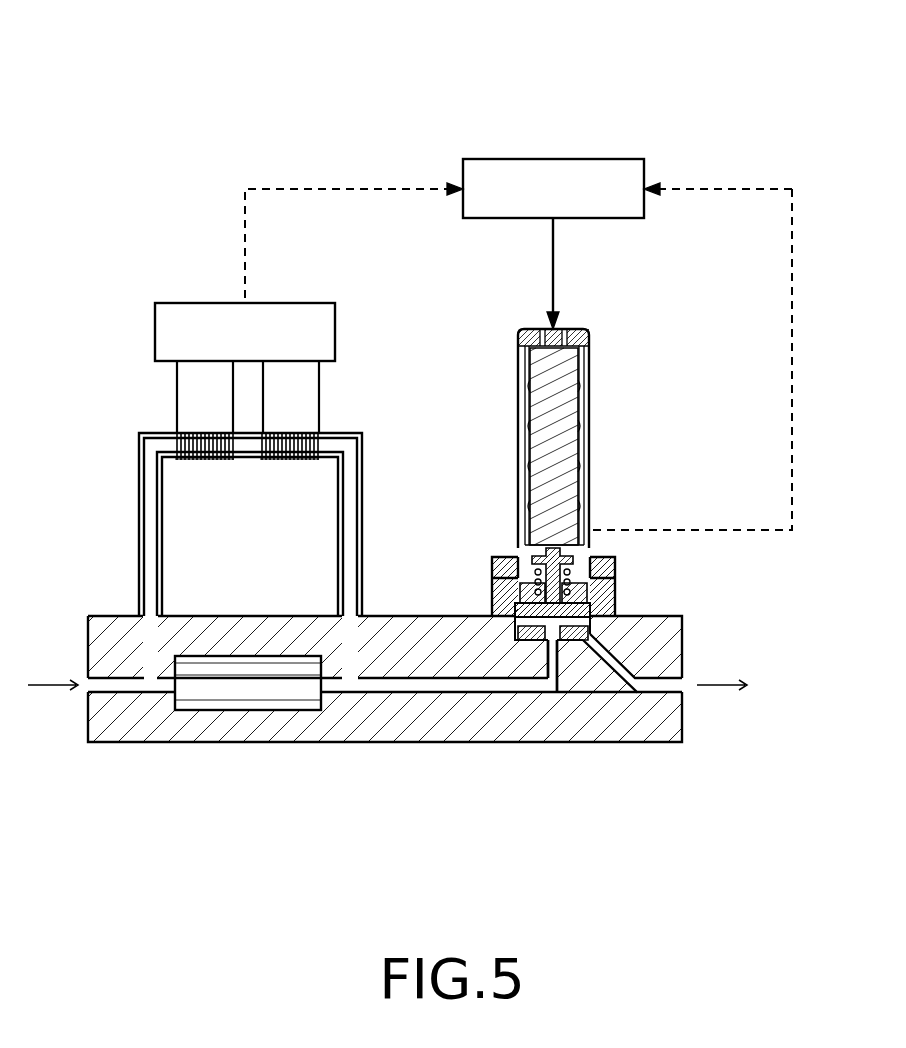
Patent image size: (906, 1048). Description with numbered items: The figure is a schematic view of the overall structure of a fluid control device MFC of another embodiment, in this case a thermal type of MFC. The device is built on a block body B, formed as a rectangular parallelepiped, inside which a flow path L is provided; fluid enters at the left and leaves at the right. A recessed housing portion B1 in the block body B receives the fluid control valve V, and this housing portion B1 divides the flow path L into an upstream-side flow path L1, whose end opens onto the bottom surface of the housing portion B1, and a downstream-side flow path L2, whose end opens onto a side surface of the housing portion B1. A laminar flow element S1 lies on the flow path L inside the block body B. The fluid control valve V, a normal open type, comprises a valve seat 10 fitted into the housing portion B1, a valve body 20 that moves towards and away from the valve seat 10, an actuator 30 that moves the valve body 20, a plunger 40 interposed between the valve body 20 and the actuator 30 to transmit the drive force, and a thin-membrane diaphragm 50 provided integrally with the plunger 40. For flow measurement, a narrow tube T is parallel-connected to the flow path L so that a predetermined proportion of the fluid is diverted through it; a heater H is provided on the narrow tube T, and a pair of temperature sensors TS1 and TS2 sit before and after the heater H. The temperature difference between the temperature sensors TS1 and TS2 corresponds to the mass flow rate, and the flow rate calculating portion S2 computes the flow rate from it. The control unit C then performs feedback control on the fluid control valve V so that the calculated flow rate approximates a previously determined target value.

The fluid control device MFC is at (137, 139).
The control unit C is at (553, 158).
The fluid control valve V is at (603, 331).
The flow rate calculating portion S2 is at (336, 331).
The narrow tube T is at (140, 465).
The heater H is at (140, 518).
The temperature sensor TS1 is at (203, 463).
The temperature sensor TS2 is at (288, 463).
The actuator 30 is at (582, 392).
The plunger 40 is at (520, 566).
The diaphragm 50 is at (610, 575).
The valve body 20 is at (610, 602).
The valve seat 10 is at (515, 638).
The housing portion B1 is at (528, 655).
The block body B is at (148, 742).
The laminar flow element S1 is at (247, 712).
The upstream-side flow path L1 is at (543, 687).
The downstream-side flow path L2 is at (660, 687).
The flow path L is at (628, 785).